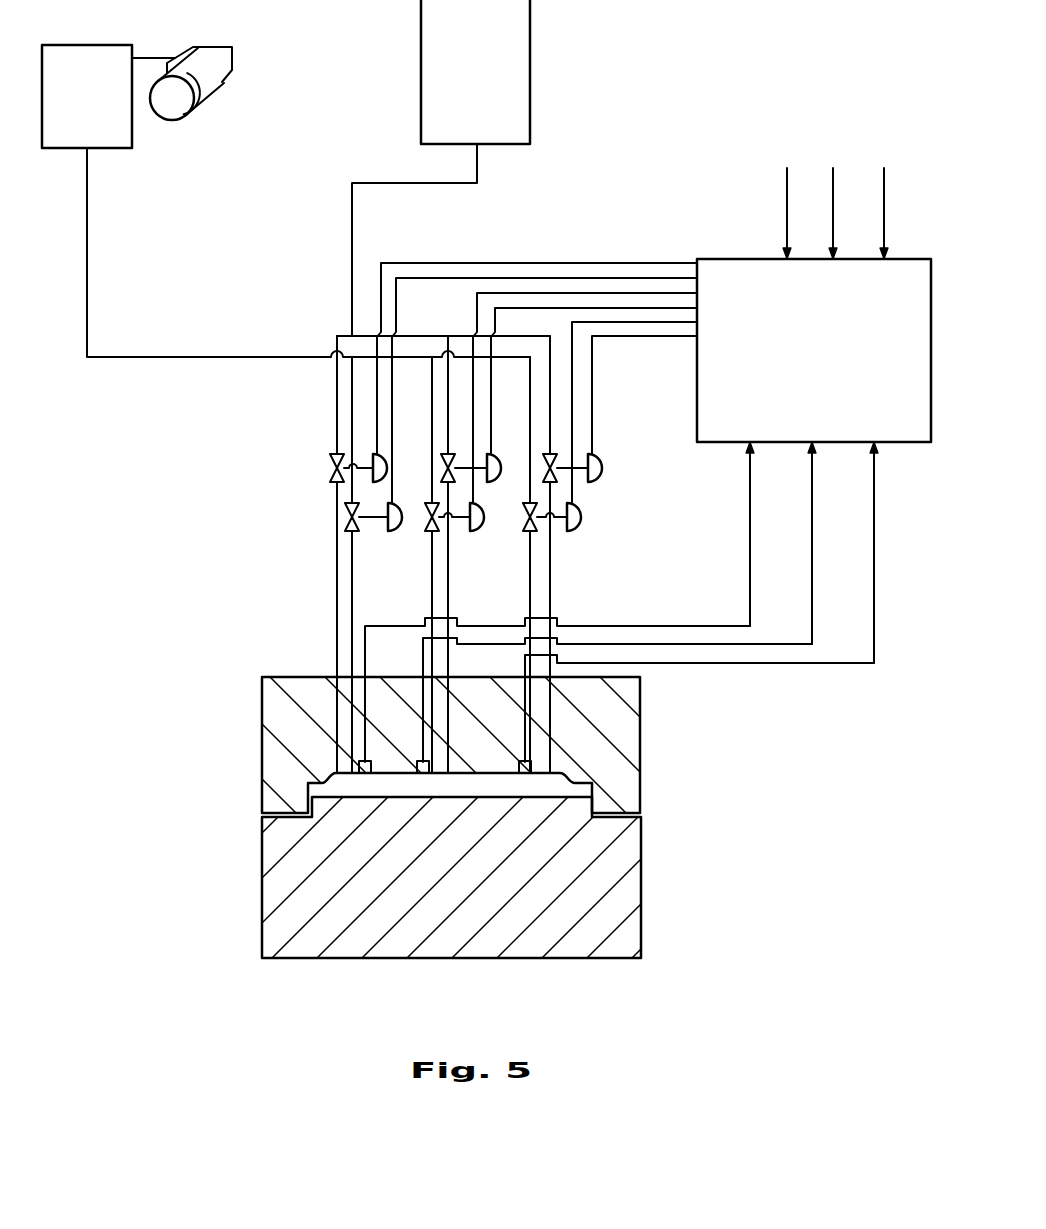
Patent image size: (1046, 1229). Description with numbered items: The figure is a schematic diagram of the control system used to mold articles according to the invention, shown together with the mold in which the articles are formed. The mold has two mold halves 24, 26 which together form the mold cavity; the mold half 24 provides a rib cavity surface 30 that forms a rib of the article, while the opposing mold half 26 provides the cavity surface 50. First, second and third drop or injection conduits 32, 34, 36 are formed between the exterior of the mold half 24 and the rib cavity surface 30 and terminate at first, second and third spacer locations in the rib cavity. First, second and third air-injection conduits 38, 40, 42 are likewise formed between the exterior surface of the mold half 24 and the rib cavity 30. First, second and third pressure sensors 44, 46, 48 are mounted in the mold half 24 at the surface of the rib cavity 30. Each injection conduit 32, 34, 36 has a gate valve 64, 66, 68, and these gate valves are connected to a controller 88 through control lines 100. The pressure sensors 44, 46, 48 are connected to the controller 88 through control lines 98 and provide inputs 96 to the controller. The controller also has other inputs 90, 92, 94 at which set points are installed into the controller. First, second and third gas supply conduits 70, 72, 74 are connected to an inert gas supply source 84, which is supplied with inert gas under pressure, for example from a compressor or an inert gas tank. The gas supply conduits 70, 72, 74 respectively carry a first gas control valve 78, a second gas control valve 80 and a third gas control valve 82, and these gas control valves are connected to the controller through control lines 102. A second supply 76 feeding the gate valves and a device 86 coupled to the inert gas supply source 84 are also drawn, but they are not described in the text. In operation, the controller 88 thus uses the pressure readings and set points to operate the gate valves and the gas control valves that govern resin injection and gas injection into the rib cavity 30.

The mold half 24 is at (640, 742).
The mold half 26 is at (643, 886).
The rib cavity surface 30 is at (562, 779).
The first drop (injection) conduit 32 is at (337, 560).
The second drop (injection) conduit 34 is at (448, 607).
The third drop (injection) conduit 36 is at (550, 567).
The first air-injection conduit 38 is at (363, 697).
The second air-injection conduit 40 is at (443, 697).
The third air-injection conduit 42 is at (535, 735).
The first pressure sensor 44 is at (363, 774).
The second pressure sensor 46 is at (422, 774).
The third pressure sensor 48 is at (528, 774).
The cavity surface 50 is at (492, 789).
The gate valve 64 is at (330, 464).
The gate valve 66 is at (443, 463).
The gate valve 68 is at (553, 452).
The first gas supply conduit 70 is at (352, 395).
The second gas supply conduit 72 is at (432, 412).
The third gas supply conduit 74 is at (530, 423).
The pressurized fluid source 76 is at (530, 53).
The first gas control valve 78 is at (355, 522).
The second gas control valve 80 is at (433, 520).
The third gas control valve 82 is at (527, 517).
The inert gas supply source 84 is at (123, 150).
The camera 86 is at (232, 58).
The controller 88 is at (723, 258).
The input 90 is at (884, 205).
The input 92 is at (833, 202).
The input 94 is at (787, 195).
The inputs 96 is at (750, 512).
The control lines 98 is at (687, 663).
The control lines 100 is at (603, 263).
The control lines 102 is at (627, 363).